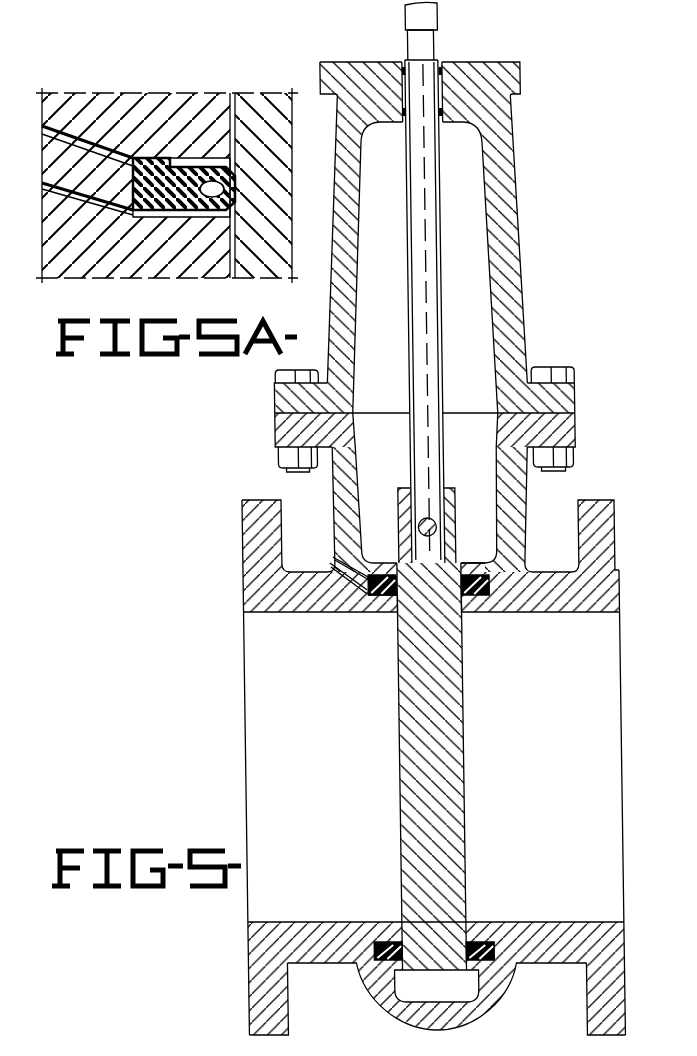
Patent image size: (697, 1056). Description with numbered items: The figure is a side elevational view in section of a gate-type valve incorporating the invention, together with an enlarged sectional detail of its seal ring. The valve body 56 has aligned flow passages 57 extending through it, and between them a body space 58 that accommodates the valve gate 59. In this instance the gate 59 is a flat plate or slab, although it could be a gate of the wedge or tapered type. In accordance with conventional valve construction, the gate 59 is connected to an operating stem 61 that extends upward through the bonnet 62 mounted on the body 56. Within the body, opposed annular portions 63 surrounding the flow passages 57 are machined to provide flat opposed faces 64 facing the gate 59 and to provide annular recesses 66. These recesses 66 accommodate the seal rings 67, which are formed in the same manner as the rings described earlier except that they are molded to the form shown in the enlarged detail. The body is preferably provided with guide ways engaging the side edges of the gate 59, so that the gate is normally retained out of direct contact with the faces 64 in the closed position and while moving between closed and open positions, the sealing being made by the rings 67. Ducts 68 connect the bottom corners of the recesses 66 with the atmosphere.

The valve body 56 is at (519, 580).
The flow passages 57 is at (234, 668).
The body space 58 is at (467, 462).
The valve gate 59 is at (450, 765).
The operating stem 61 is at (438, 323).
The bonnet 62 is at (510, 236).
The opposed annular portions 63 is at (367, 596).
The flat opposed faces 64 is at (377, 596).
The annular recesses 66 is at (359, 596).
The seal rings 67 is at (485, 587).
The ducts 68 is at (328, 546).